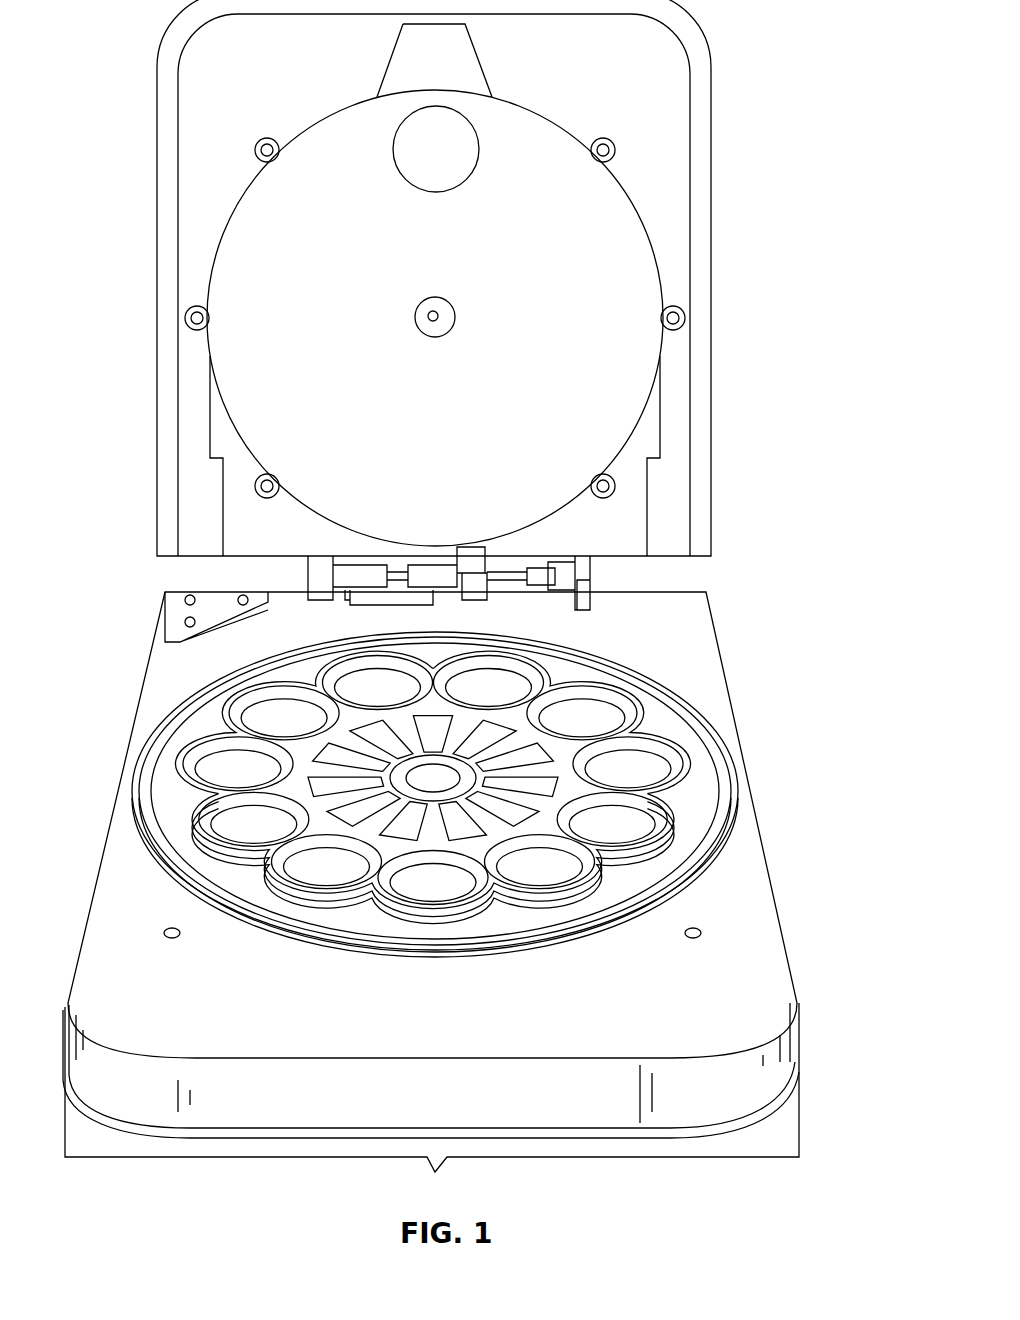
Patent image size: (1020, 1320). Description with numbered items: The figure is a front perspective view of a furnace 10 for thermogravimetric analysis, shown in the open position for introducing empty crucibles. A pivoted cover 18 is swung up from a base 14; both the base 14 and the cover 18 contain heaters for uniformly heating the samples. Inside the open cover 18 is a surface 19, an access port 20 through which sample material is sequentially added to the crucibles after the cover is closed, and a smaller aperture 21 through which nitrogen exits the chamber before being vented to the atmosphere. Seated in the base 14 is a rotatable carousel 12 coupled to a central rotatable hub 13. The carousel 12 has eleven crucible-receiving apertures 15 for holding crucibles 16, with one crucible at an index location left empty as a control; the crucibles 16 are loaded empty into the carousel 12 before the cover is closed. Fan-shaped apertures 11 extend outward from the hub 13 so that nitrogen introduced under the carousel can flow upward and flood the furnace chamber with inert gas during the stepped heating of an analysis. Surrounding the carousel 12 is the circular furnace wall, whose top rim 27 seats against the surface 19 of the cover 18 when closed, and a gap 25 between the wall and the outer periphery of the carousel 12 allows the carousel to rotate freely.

The furnace 10 is at (780, 395).
The fan-shaped apertures 11 is at (403, 826).
The carousel 12 is at (693, 708).
The rotatable hub 13 is at (440, 772).
The base 14 is at (797, 1000).
The crucible-receiving apertures 15 is at (632, 674).
The crucibles 16 is at (500, 695).
The pivoted cover 18 is at (700, 282).
The surface of cover 19 is at (361, 226).
The access port 20 is at (482, 164).
The aperture 21 is at (440, 330).
The gap 25 is at (693, 827).
The top rim 27 is at (720, 767).